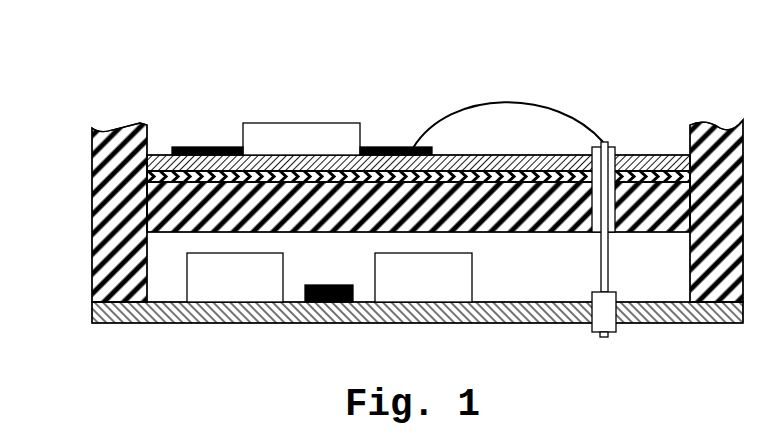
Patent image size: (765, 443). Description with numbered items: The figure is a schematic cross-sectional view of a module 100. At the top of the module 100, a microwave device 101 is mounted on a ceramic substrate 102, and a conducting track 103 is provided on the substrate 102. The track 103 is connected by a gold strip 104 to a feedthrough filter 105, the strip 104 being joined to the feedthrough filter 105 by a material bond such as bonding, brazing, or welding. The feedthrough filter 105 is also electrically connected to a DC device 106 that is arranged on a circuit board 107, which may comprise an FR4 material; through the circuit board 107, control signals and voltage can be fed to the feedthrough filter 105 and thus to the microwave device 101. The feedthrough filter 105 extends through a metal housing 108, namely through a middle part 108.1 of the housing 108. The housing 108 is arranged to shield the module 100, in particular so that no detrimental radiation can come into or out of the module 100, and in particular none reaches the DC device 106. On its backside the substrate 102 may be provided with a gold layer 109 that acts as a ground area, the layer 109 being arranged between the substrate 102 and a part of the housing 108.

The module 100 is at (145, 52).
The microwave device 101 is at (300, 130).
The ceramic substrate 102 is at (640, 158).
The conducting track 103 is at (372, 148).
The gold strip 104 is at (480, 105).
The feedthrough filter 105 is at (580, 243).
The DC device 106 is at (228, 290).
The circuit board 107 is at (120, 303).
The metal housing 108 is at (100, 247).
The middle part of the housing 108.1 is at (635, 223).
The gold layer 109 is at (667, 158).